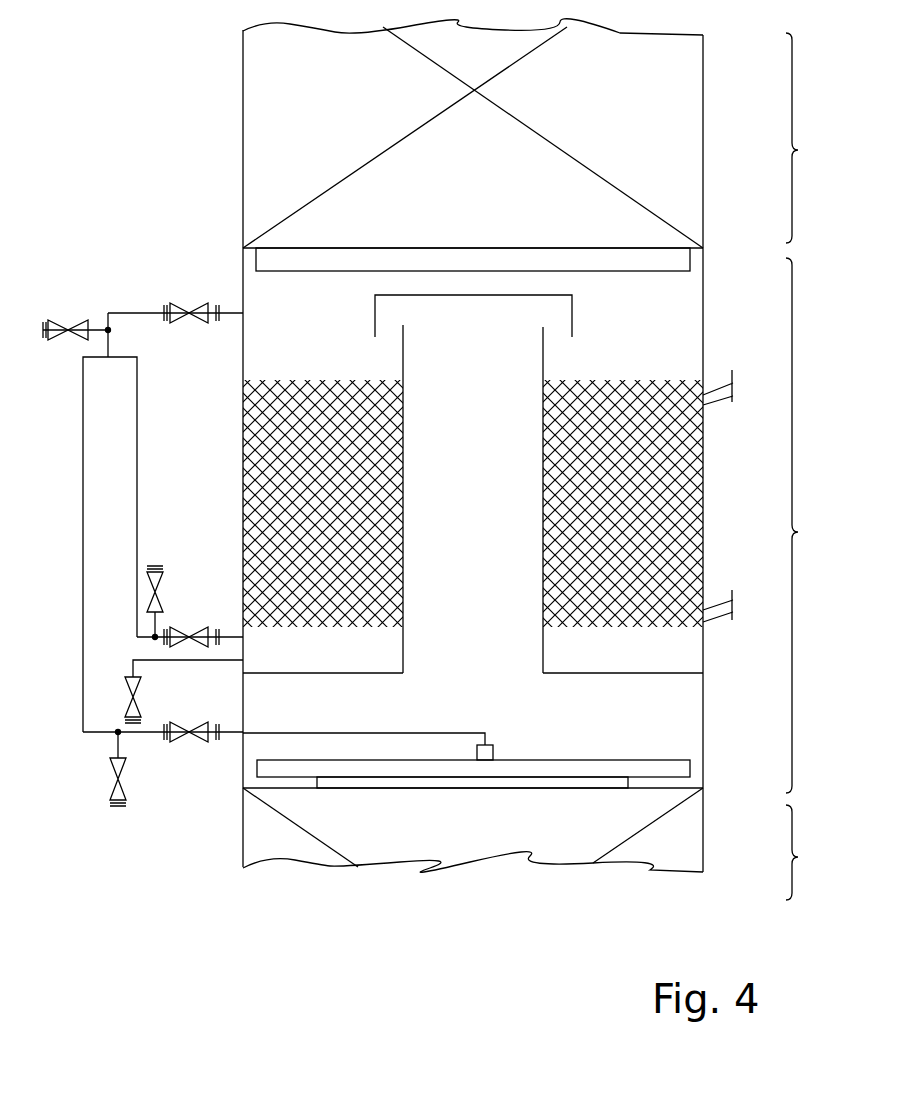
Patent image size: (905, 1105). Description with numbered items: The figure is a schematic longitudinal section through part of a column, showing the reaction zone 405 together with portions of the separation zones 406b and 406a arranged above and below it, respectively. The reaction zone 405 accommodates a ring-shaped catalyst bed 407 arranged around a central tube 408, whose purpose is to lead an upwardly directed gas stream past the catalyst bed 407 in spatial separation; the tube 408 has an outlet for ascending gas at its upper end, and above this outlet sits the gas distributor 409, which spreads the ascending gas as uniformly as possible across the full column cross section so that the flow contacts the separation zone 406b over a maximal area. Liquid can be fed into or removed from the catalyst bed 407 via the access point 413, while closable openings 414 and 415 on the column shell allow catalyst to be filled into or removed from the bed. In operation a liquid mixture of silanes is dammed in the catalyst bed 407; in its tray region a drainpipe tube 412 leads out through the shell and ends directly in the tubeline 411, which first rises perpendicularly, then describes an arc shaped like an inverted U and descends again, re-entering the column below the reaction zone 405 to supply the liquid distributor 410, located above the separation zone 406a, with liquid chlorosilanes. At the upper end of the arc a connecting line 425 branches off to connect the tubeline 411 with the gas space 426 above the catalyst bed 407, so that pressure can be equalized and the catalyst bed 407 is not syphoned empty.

The reaction zone 405 is at (816, 525).
The separation zone 406a is at (822, 852).
The separation zone 406b is at (822, 138).
The catalyst bed 407 is at (280, 490).
The tube 408 is at (493, 613).
The gas distributor 409 is at (403, 294).
The liquid distributor 410 is at (398, 772).
The tubeline 411 is at (83, 540).
The drainpipe tube 412 is at (233, 635).
The access point 413 is at (228, 662).
The closable opening 414 is at (737, 385).
The closable opening 415 is at (735, 603).
The connecting line 425 is at (157, 313).
The gas space 426 is at (265, 292).